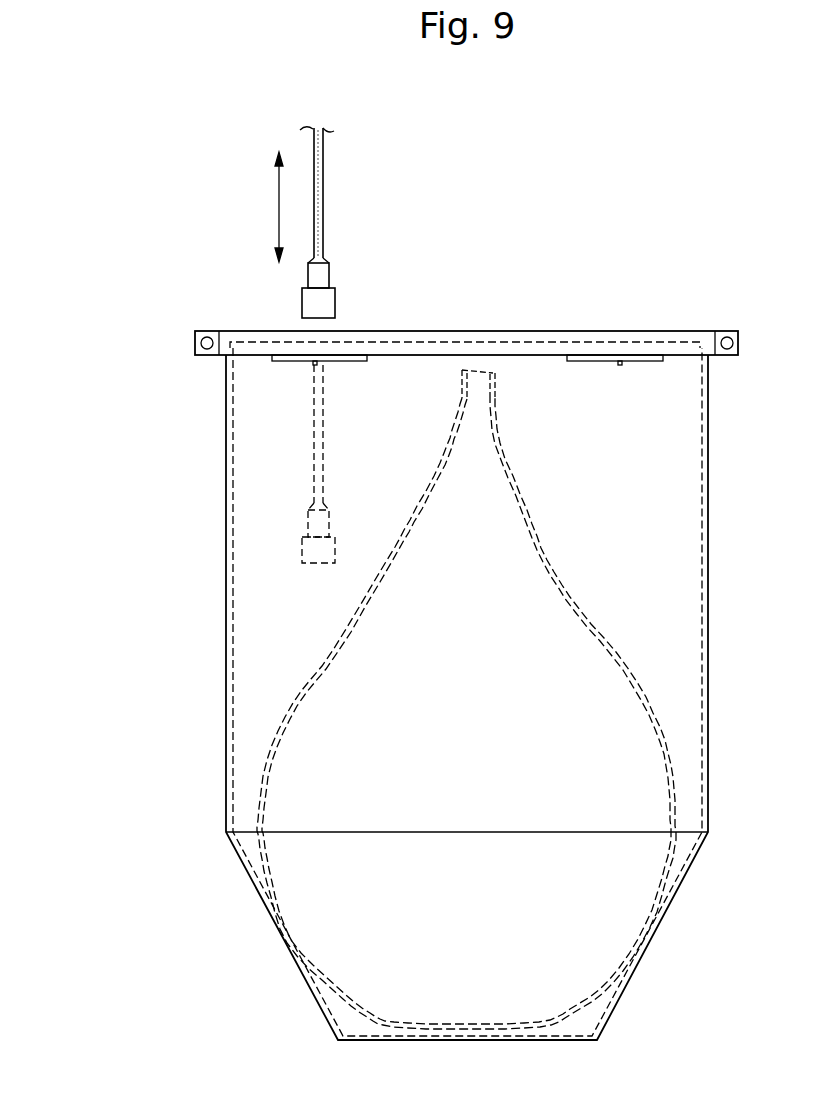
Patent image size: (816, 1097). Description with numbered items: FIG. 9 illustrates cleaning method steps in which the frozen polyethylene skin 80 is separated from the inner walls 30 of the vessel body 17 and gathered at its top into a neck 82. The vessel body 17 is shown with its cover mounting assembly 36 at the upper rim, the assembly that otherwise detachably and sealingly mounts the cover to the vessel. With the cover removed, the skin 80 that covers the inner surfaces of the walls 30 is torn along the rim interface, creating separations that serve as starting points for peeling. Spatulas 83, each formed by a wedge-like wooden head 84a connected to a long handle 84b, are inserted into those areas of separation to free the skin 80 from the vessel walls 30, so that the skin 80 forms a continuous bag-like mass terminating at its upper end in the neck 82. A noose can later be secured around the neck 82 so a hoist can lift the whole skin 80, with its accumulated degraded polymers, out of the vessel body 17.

The vessel body 17 is at (528, 718).
The inner walls 30 is at (226, 591).
The cover mounting assembly 36 is at (158, 338).
The skin layer 80 is at (547, 550).
The neck 82 is at (495, 402).
The spatulas 83 is at (349, 207).
The wedge-like wooden head 84a is at (335, 297).
The long handle 84b is at (324, 151).